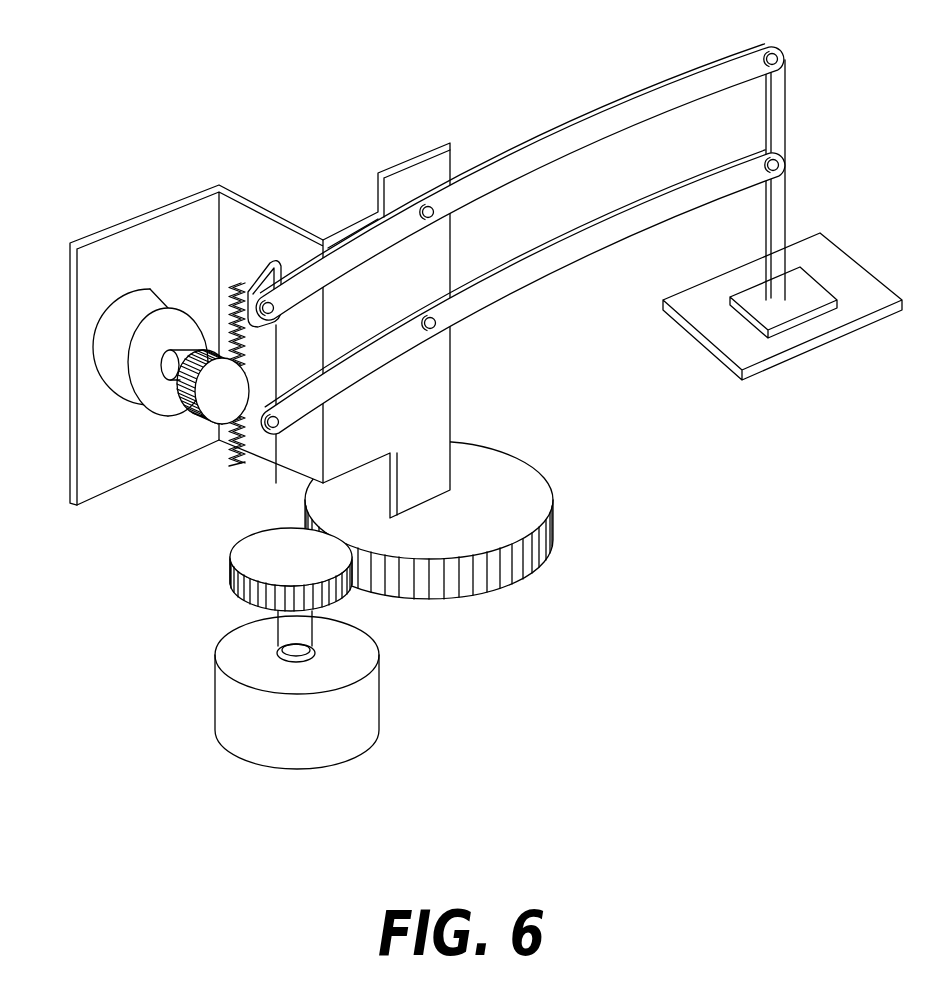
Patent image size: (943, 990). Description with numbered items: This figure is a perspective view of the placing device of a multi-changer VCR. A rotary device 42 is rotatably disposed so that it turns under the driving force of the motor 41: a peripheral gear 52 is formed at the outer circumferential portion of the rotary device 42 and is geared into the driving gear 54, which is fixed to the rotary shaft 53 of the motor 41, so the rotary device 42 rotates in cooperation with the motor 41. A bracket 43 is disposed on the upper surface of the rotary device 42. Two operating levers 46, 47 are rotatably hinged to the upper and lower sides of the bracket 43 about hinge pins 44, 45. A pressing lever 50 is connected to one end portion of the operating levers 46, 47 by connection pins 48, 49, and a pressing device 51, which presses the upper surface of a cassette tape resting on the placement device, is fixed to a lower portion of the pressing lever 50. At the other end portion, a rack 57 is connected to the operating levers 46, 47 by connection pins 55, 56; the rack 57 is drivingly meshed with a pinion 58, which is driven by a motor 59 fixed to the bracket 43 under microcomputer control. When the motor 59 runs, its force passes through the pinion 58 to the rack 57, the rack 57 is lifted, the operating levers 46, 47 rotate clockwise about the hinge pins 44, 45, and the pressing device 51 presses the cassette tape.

The motor 41 is at (242, 723).
The rotary device 42 is at (525, 498).
The bracket 43 is at (405, 172).
The hinge pin 44 is at (432, 208).
The hinge pin 45 is at (437, 326).
The operating lever 46 is at (563, 142).
The operating lever 47 is at (530, 265).
The connection pin 48 is at (782, 54).
The connection pin 49 is at (782, 164).
The pressing lever 50 is at (775, 208).
The pressing device 51 is at (780, 340).
The peripheral gear 52 is at (508, 585).
The rotary shaft 53 is at (288, 628).
The driving gear 54 is at (228, 582).
The connection pin 55 is at (276, 300).
The connection pin 56 is at (273, 430).
The rack 57 is at (253, 270).
The pinion 58 is at (212, 422).
The motor 59 is at (110, 380).